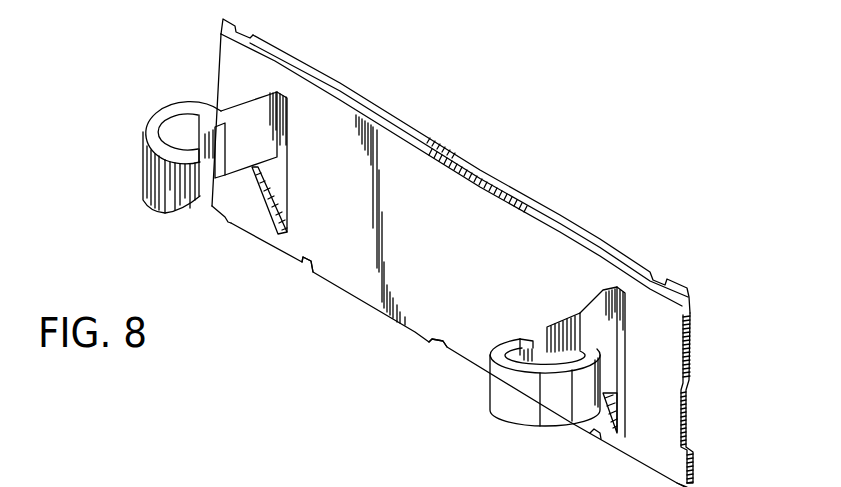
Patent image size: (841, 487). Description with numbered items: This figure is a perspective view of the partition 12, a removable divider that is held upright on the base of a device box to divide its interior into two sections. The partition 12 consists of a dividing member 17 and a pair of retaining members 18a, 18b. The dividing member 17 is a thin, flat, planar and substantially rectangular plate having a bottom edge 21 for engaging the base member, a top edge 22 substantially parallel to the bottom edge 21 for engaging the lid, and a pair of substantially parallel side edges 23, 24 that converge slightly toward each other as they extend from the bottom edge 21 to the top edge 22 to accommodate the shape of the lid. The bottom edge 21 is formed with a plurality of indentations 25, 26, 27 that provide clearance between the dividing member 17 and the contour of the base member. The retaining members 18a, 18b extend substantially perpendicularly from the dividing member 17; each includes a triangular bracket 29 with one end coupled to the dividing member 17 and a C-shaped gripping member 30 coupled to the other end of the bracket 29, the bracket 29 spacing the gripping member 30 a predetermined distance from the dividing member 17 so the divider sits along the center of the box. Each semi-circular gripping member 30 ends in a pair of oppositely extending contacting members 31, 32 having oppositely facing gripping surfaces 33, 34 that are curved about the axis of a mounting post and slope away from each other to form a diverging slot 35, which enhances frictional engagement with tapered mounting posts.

The partition 12 is at (319, 297).
The dividing member 17 is at (432, 221).
The retaining member 18a is at (146, 106).
The retaining member 18b is at (489, 420).
The bottom edge 21 is at (366, 305).
The top edge 22 is at (482, 171).
The side edge 23 is at (221, 52).
The side edge 24 is at (692, 338).
The indentation 25 is at (213, 212).
The indentation 26 is at (303, 263).
The indentation 27 is at (445, 344).
The triangular bracket 29 is at (264, 208).
The C-shaped gripping member 30 is at (145, 148).
The contacting member 31 is at (247, 125).
The contacting member 32 is at (175, 170).
The gripping surface 33 is at (202, 138).
The gripping surface 34 is at (194, 140).
The diverging slot 35 is at (201, 126).